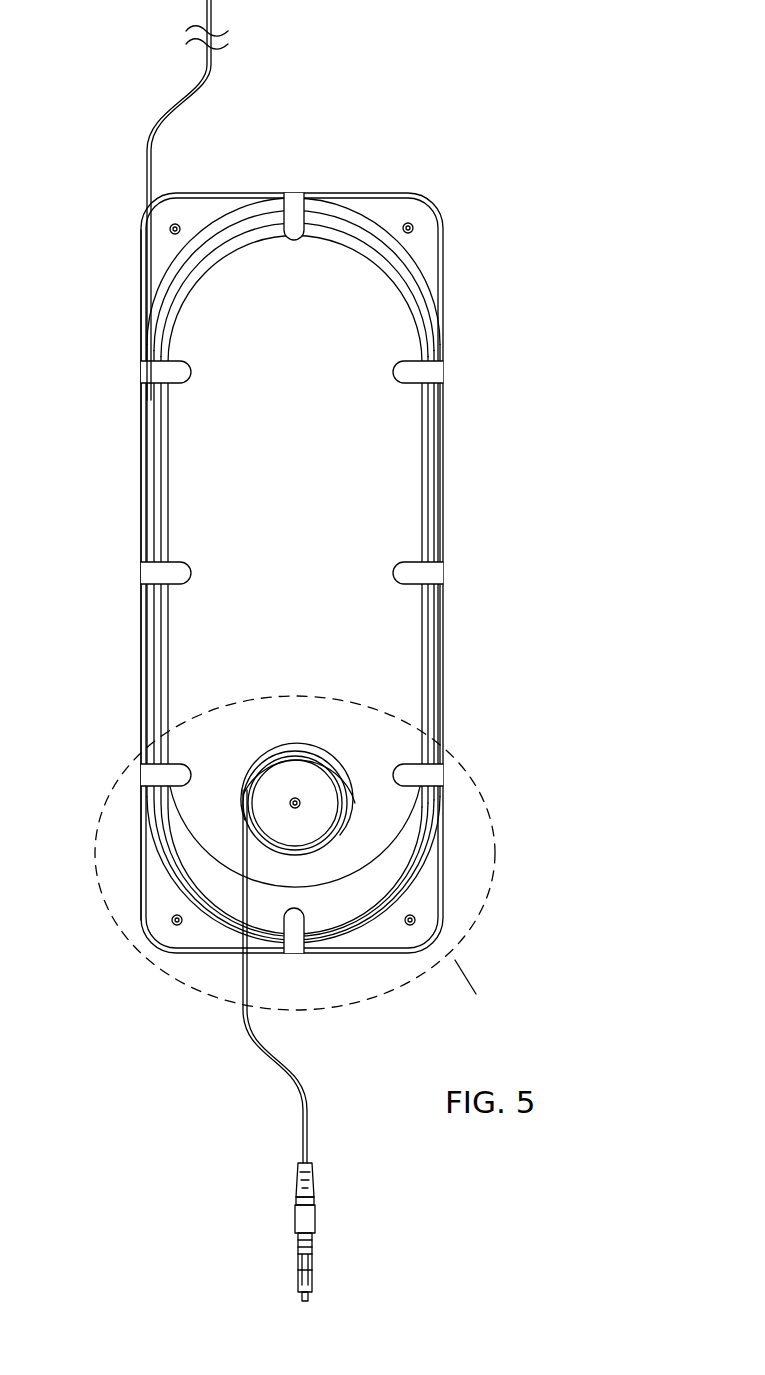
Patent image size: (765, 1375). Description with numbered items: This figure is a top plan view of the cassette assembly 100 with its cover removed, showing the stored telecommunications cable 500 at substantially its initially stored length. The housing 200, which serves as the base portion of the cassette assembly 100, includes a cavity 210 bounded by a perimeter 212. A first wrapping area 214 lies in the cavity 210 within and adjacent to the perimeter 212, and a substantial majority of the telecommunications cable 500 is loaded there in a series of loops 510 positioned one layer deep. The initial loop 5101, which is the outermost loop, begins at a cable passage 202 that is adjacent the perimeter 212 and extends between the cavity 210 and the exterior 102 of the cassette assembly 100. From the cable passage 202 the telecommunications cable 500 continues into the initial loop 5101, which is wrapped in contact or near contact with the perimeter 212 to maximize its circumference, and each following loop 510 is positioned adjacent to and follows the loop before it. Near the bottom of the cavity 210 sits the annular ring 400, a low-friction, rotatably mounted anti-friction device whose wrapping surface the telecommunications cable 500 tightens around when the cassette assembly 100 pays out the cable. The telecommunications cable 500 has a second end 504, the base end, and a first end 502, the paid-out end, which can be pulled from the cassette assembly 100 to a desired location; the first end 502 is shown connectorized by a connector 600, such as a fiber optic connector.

The cassette assembly 100 is at (325, 650).
The housing 200 is at (288, 554).
The exterior 102 is at (183, 195).
The cable passage 202 is at (146, 280).
The cavity 210 is at (322, 597).
The perimeter 212 is at (229, 212).
The first wrapping area 214 is at (432, 650).
The annular ring 400 is at (318, 857).
The telecommunications cable 500 is at (189, 200).
The second end 504 is at (213, 8).
The first end 502 is at (313, 1045).
The loops 510 is at (251, 630).
The initial loop 5101 is at (152, 505).
The connector 600 is at (290, 1254).